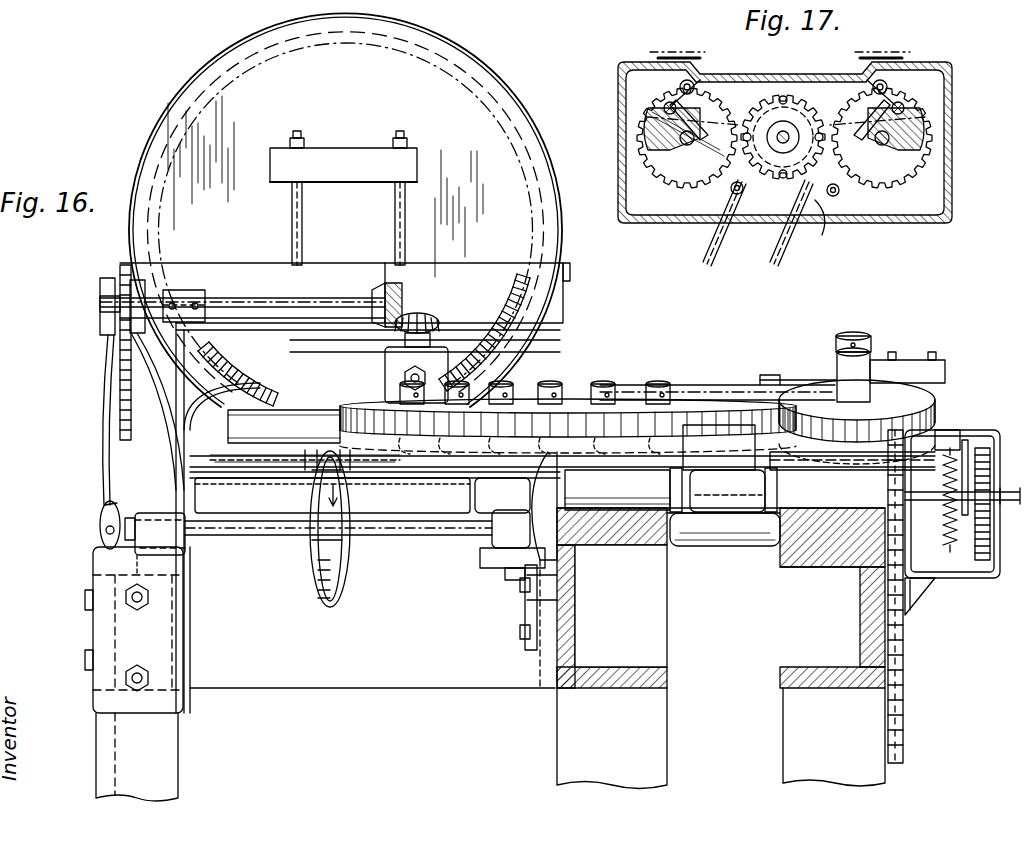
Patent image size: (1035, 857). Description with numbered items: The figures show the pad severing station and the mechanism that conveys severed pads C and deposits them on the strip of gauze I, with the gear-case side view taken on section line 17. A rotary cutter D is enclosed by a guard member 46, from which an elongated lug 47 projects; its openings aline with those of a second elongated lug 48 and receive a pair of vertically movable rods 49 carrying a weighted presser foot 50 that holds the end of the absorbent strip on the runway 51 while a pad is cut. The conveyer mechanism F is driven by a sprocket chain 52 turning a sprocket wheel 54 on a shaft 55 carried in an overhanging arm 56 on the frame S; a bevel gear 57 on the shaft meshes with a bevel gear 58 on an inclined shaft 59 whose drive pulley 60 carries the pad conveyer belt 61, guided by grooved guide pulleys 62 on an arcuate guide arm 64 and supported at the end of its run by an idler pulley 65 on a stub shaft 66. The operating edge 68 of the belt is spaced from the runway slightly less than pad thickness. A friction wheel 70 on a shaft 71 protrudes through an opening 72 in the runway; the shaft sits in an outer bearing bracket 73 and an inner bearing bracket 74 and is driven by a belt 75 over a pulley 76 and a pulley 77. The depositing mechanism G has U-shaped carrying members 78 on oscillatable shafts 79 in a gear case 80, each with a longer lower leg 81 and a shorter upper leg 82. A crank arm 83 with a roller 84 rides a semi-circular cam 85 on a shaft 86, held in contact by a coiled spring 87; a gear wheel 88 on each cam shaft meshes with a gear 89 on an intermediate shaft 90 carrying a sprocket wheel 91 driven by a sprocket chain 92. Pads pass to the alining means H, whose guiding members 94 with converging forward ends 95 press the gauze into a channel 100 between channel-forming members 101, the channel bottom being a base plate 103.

In FIG. 16, the guard member 46 is at (502, 78).
In FIG. 16, the elongated lug 47 is at (418, 165).
In FIG. 16, the elongated lug 48 is at (280, 290).
In FIG. 16, the vertically movable rods 49 is at (395, 200).
In FIG. 16, the weighted presser foot 50 is at (228, 427).
In FIG. 16, the runway 51 is at (275, 468).
In FIG. 16, the sprocket chain 52 is at (120, 382).
In FIG. 16, the sprocket wheel 54 is at (125, 265).
In FIG. 16, the shaft 55 is at (100, 304).
In FIG. 16, the overhanging arm 56 is at (160, 365).
In FIG. 16, the bevel gear 57 is at (398, 290).
In FIG. 16, the bevel gear 58 is at (440, 330).
In FIG. 16, the inclined shaft 59 is at (420, 330).
In FIG. 16, the drive pulley 60 is at (385, 398).
In FIG. 16, the pad conveyer belt 61 is at (340, 425).
In FIG. 16, the grooved guide pulleys 62 is at (512, 470).
In FIG. 16, the arcuate guide arm 64 is at (712, 398).
In FIG. 16, the idler pulley 65 is at (900, 396).
In FIG. 16, the stub shaft 66 is at (855, 333).
In FIG. 16, the operating edge of conveyer belt 68 is at (440, 470).
In FIG. 16, the friction wheel 70 is at (350, 558).
In FIG. 16, the shaft 71 is at (226, 535).
In FIG. 16, the opening in runway 72 is at (303, 472).
In FIG. 16, the outer bearing bracket 73 is at (150, 513).
In FIG. 16, the inner bearing bracket 74 is at (497, 535).
In FIG. 16, the belt 75 is at (105, 432).
In FIG. 16, the pulley 76 is at (102, 522).
In FIG. 16, the pulley 77 is at (100, 285).
In FIG. 16, the U-shaped carrying members 78 is at (719, 447).
In FIG. 17, the U-shaped carrying members 78 is at (672, 57).
In FIG. 16, the oscillatable shafts 79 is at (826, 470).
In FIG. 17, the oscillatable shafts 79 is at (650, 132).
In FIG. 16, the gear case 80 is at (945, 585).
In FIG. 17, the gear case 80 is at (640, 224).
In FIG. 16, the lower leg of carrying member 81 is at (672, 470).
In FIG. 16, the upper leg of carrying member 82 is at (702, 436).
In FIG. 16, the crank arm 83 is at (950, 510).
In FIG. 17, the crank arm 83 is at (672, 100).
In FIG. 16, the roller 84 is at (957, 440).
In FIG. 17, the roller 84 is at (690, 85).
In FIG. 16, the semi-circular cam 85 is at (985, 450).
In FIG. 17, the semi-circular cam 85 is at (690, 125).
In FIG. 16, the shaft 86 is at (960, 546).
In FIG. 17, the shaft 86 is at (668, 148).
In FIG. 16, the coiled spring 87 is at (961, 563).
In FIG. 17, the coiled spring 87 is at (690, 146).
In FIG. 16, the gear wheel 88 is at (990, 540).
In FIG. 17, the gear wheel 88 is at (660, 178).
In FIG. 17, the gear 89 is at (805, 223).
In FIG. 17, the intermediate shaft 90 is at (787, 130).
In FIG. 16, the sprocket wheel 91 is at (862, 555).
In FIG. 17, the sprocket wheel 91 is at (778, 110).
In FIG. 16, the sprocket chain 92 is at (903, 718).
In FIG. 17, the sprocket chain 92 is at (728, 223).
In FIG. 16, the pad guiding and directing members 94 is at (672, 500).
In FIG. 16, the forward ends of guiding members 95 is at (700, 505).
In FIG. 16, the gauze channel 100 is at (808, 568).
In FIG. 16, the channel-forming members 101 is at (628, 555).
In FIG. 16, the base plate 103 is at (702, 548).
In FIG. 16, the section line 17— 17 is at (968, 417).
In FIG. 16, the rotary cutter D is at (225, 60).
In FIG. 16, the conveyer mechanism F is at (750, 350).
In FIG. 16, the depositing mechanism G is at (968, 580).
In FIG. 17, the depositing mechanism G is at (640, 45).
In FIG. 16, the alining means H is at (761, 493).
In FIG. 16, the strip of gauze I is at (620, 505).
In FIG. 16, the pad C is at (722, 540).
In FIG. 16, the frame S is at (545, 730).